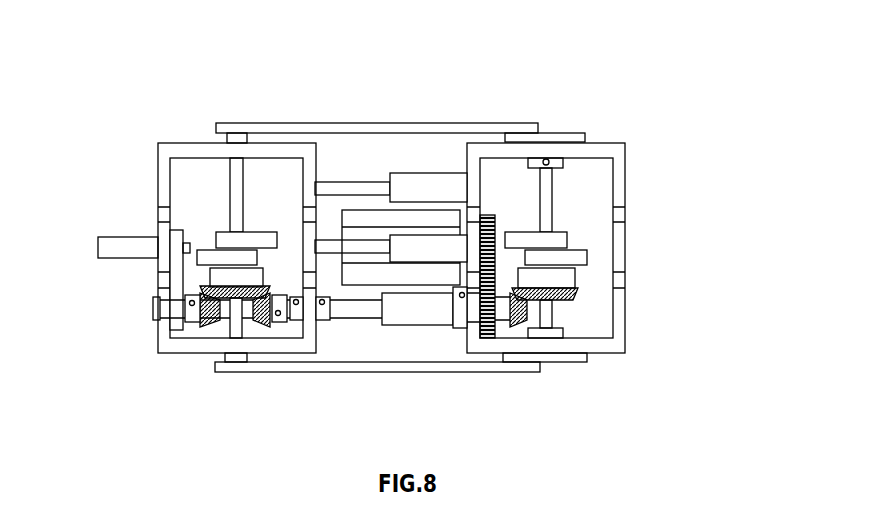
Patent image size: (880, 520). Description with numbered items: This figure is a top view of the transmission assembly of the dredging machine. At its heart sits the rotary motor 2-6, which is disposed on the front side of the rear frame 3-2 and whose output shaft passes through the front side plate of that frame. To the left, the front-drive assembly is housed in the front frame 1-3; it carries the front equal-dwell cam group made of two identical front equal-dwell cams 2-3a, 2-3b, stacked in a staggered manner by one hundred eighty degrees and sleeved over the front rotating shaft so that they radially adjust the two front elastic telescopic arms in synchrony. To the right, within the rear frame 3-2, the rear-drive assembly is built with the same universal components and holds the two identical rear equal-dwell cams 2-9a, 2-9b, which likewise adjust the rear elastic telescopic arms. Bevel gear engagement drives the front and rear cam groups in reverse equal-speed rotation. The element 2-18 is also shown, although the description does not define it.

The front frame 1-3 is at (312, 343).
The rear frame 3-2 is at (473, 343).
The handle shaft 2-18 is at (177, 262).
The front equal-dwell cam 2-3a is at (205, 250).
The front equal-dwell cam 2-3b is at (265, 238).
The rotary motor 2-6 is at (385, 225).
The rear equal-dwell cam 2-9a is at (577, 255).
The rear equal-dwell cam 2-9b is at (523, 242).